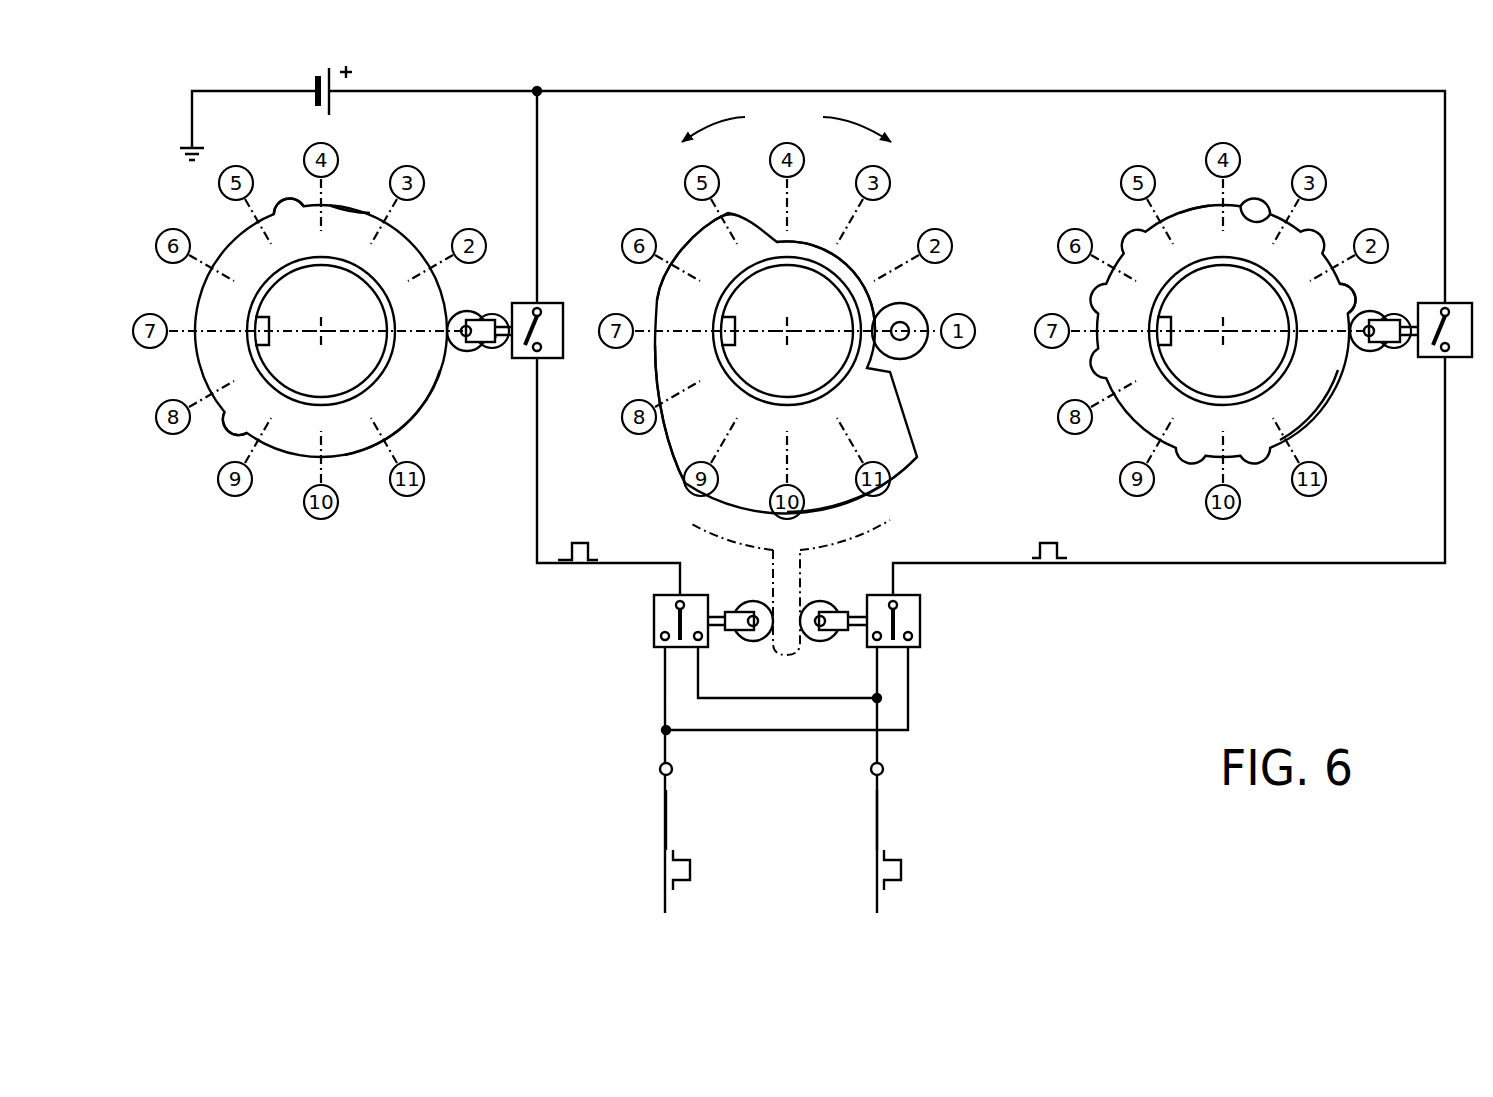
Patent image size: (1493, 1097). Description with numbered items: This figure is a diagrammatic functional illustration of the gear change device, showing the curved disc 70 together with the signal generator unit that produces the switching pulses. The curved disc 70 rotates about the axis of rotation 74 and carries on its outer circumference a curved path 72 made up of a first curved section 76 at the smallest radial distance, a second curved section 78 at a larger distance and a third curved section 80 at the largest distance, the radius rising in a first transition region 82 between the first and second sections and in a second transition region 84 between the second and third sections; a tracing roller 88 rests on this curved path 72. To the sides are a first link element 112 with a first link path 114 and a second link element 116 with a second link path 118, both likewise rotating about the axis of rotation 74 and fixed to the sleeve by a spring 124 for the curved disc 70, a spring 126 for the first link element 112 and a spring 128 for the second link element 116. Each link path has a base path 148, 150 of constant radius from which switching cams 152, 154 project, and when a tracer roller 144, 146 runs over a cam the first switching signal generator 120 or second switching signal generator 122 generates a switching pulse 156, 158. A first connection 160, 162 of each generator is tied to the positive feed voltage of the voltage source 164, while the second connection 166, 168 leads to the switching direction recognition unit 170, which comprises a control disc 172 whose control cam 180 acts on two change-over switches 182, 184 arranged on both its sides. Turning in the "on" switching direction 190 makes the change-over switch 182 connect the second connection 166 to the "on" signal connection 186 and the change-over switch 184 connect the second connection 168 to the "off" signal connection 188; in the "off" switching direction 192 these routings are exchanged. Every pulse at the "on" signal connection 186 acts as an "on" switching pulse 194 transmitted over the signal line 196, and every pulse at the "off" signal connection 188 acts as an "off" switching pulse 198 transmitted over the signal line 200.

The curved disc 70 is at (795, 392).
The curved path 72 is at (655, 303).
The axis of rotation 74 is at (326, 326).
The first curved section 76 is at (842, 266).
The second curved section 78 is at (683, 242).
The third curved section 80 is at (873, 488).
The first transition region 82 is at (741, 215).
The second transition region 84 is at (675, 432).
The tracing roller 88 is at (912, 347).
The first link element 112 is at (1340, 212).
The first link path 114 is at (1312, 421).
The second link element 116 is at (418, 226).
The second link path 118 is at (410, 421).
The first switching signal generator 120 is at (1430, 360).
The second switching signal generator 122 is at (528, 360).
The spring 124 is at (734, 335).
The spring 126 is at (1172, 335).
The spring 128 is at (270, 333).
The tracer roller 144 is at (1368, 352).
The tracer roller 146 is at (466, 352).
The base path 148 is at (1212, 202).
The base path 150 is at (352, 205).
The switching cam 152 is at (1262, 200).
The switching cam 154 is at (288, 203).
The switching pulse 156 is at (1060, 548).
The switching pulse 158 is at (576, 549).
The first connection 160 is at (1455, 302).
The first connection 162 is at (545, 302).
The voltage source 164 is at (313, 76).
The second connection 166 is at (1450, 352).
The second connection 168 is at (543, 352).
The switching direction recognition unit 170 is at (806, 630).
The control disc 172 is at (722, 536).
The control cam 180 is at (780, 658).
The change-over switch 182 is at (920, 630).
The change-over switch 184 is at (654, 630).
The "on" signal connection 186 is at (883, 769).
The "off" signal connection 188 is at (660, 769).
The "on" switching direction 190 is at (860, 117).
The "off" switching direction 192 is at (712, 117).
The "on" switching pulse 194 is at (905, 870).
The signal line 196 is at (878, 826).
The "off" switching pulse 198 is at (693, 870).
The signal line 200 is at (665, 828).